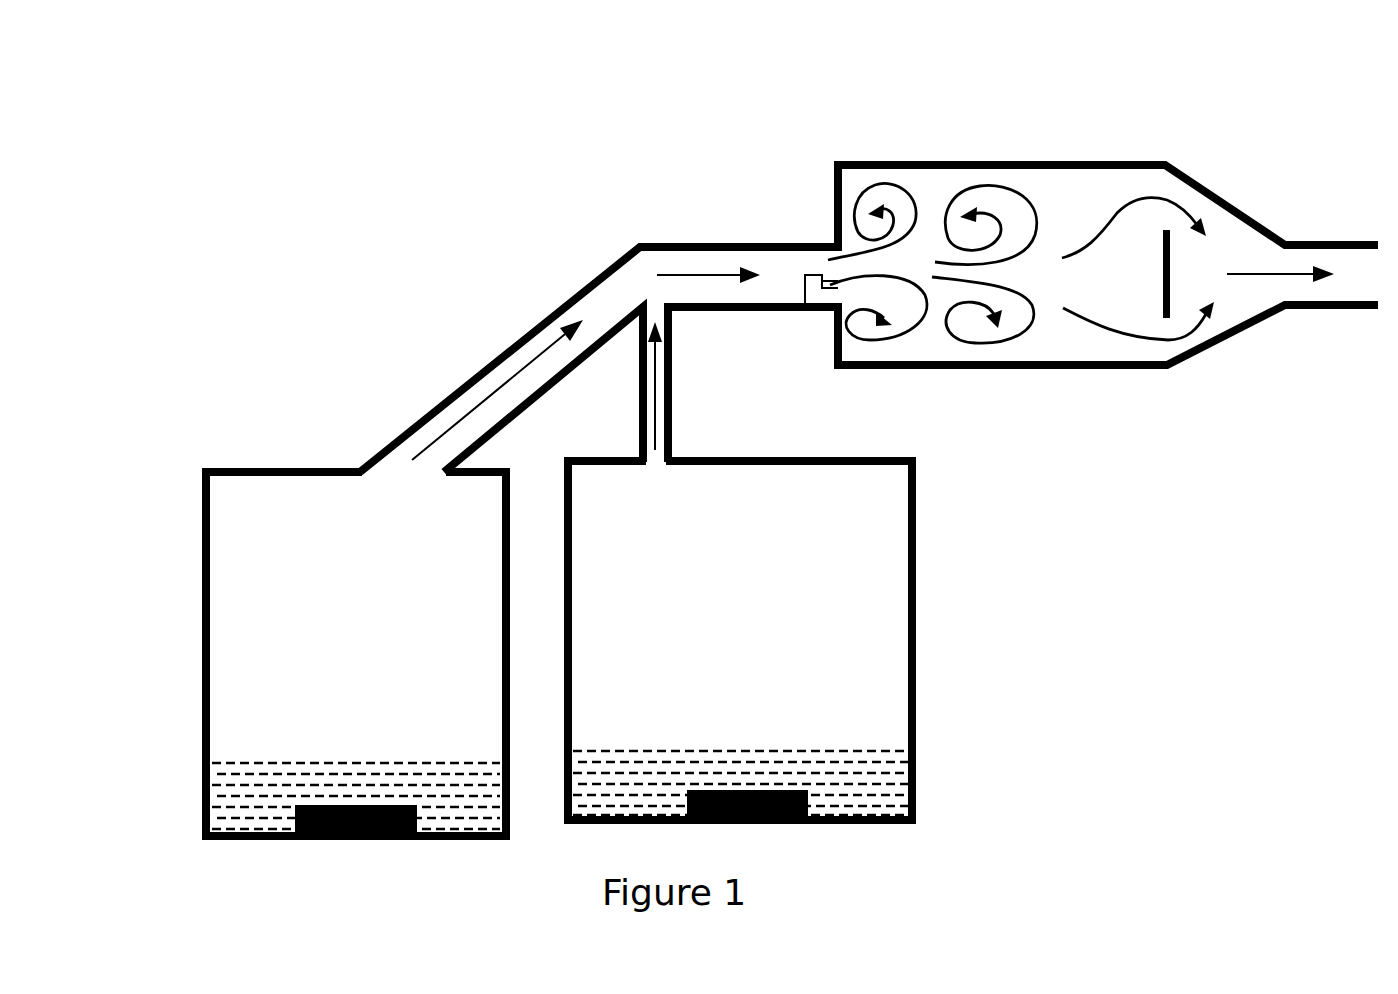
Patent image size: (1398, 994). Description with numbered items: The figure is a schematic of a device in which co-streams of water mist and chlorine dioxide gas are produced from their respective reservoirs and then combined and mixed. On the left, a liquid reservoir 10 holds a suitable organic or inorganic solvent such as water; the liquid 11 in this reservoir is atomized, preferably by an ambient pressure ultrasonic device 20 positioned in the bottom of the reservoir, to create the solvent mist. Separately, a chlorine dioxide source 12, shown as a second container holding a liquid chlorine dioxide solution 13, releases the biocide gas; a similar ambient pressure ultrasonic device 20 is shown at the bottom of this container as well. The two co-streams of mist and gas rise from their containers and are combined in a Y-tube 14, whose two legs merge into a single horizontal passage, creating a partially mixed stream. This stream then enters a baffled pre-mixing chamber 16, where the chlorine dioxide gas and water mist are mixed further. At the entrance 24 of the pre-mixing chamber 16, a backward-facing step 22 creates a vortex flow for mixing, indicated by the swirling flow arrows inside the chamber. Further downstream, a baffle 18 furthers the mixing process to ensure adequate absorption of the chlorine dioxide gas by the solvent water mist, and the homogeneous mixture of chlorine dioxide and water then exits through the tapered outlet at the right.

The liquid reservoir 10 is at (230, 468).
The liquid in first container 11 is at (266, 778).
The chlorine dioxide source 12 is at (916, 670).
The liquid in second container 13 is at (898, 762).
The Y-tube 14 is at (700, 243).
The baffled pre-mixing chamber 16 is at (1060, 165).
The downstream baffle 18 is at (1165, 282).
The ambient pressure ultrasonic device 20 is at (340, 806).
The backward-facing step 22 is at (820, 278).
The entrance 24 is at (833, 276).